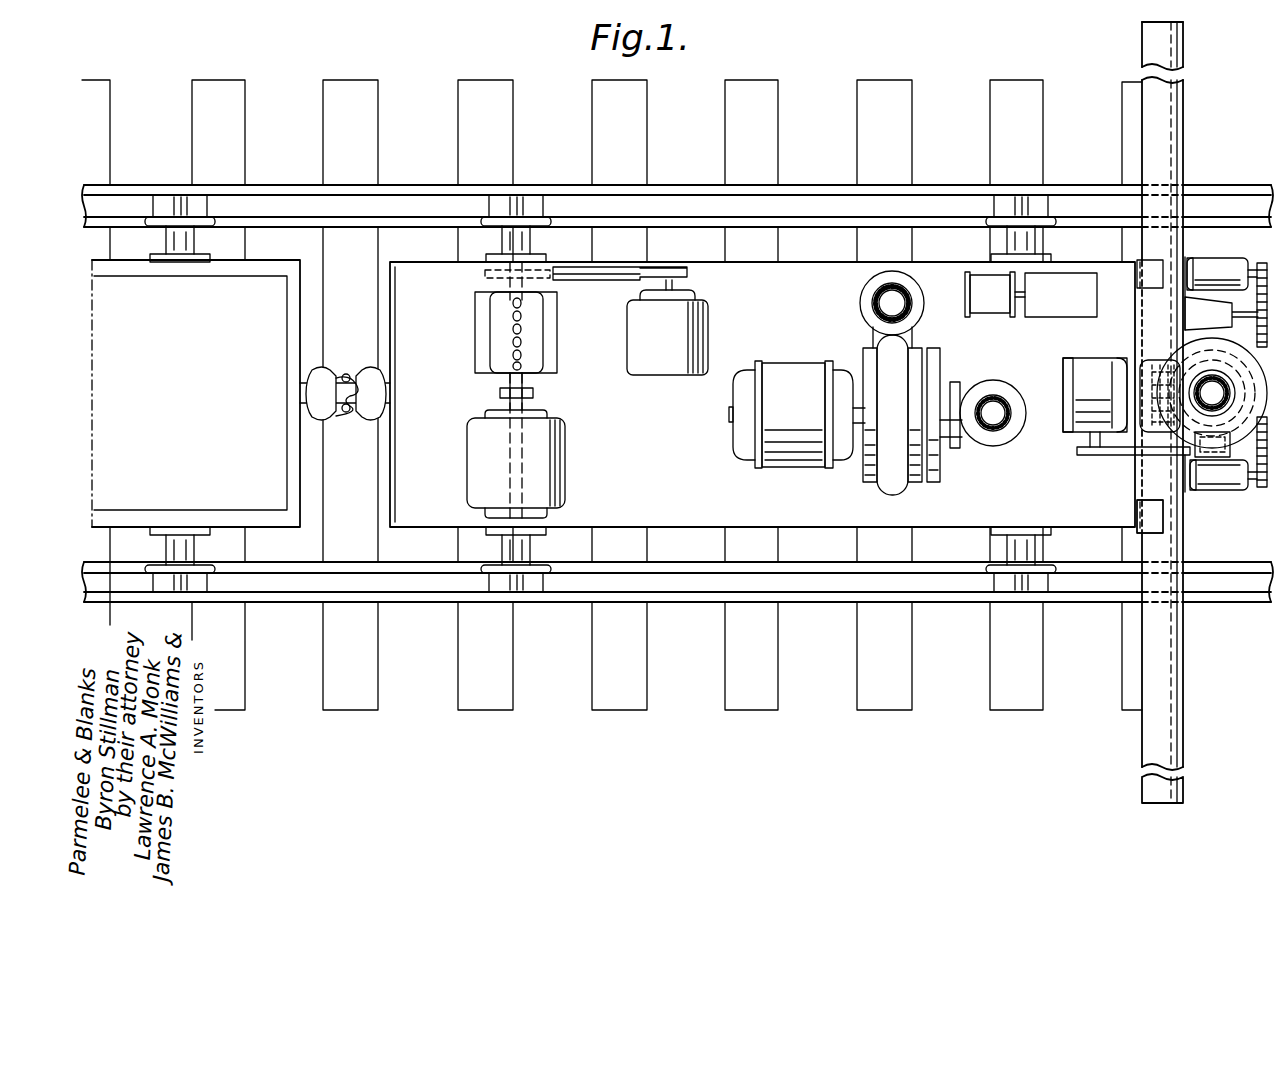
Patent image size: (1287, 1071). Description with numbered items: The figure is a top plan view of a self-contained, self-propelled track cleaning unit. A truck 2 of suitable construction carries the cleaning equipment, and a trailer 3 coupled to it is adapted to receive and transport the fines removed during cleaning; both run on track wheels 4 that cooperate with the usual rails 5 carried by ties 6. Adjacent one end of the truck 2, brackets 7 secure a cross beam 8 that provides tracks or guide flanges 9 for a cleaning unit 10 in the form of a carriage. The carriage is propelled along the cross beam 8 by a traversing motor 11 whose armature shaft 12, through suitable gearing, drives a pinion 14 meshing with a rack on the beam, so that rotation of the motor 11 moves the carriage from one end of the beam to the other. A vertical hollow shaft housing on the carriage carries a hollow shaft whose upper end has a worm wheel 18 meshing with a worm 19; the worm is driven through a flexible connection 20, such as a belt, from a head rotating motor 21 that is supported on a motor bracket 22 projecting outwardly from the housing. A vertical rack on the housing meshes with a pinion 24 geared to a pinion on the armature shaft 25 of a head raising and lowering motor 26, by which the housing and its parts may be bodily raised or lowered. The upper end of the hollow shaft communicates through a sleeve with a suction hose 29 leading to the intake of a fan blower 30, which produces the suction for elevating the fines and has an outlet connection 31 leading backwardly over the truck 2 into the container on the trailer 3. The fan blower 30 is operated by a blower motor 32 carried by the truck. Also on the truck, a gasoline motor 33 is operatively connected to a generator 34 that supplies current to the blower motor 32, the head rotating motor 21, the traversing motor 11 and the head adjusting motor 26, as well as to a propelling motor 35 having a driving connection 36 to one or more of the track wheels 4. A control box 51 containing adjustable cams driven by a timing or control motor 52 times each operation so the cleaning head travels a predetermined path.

The truck 2 is at (676, 507).
The trailer 3 is at (283, 322).
The track wheels 4 is at (203, 623).
The rails 5 is at (667, 203).
The ties 6 is at (600, 128).
The brackets 7 is at (1155, 522).
The cross beam 8 is at (1160, 633).
The tracks or guide flanges 9 is at (1183, 677).
The cleaning unit 10 is at (1177, 437).
The traversing motor 11 is at (1202, 268).
The armature shaft 12 is at (1258, 268).
The pinion 14 is at (1187, 313).
The worm wheel 18 is at (1243, 350).
The worm 19 is at (1140, 367).
The flexible connection 20 is at (1127, 450).
The head rotating motor 21 is at (1078, 379).
The motor bracket 22 is at (1063, 432).
The pinion 24 is at (1190, 460).
The armature shaft 25 is at (1253, 480).
The head raising and lowering motor 26 is at (1217, 477).
The suction hose 29 is at (993, 393).
The fan blower 30 is at (917, 375).
The outlet connection 31 is at (877, 295).
The blower motor 32 is at (778, 377).
The gasoline motor 33 is at (540, 330).
The generator 34 is at (548, 448).
The propelling motor 35 is at (700, 323).
The driving connection 36 is at (603, 270).
The control box 51 is at (1053, 295).
The timing or control motor 52 is at (980, 285).